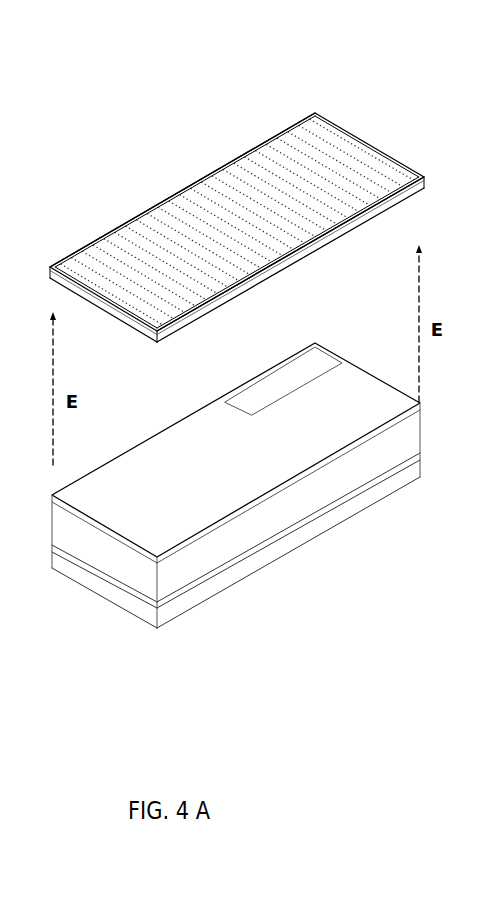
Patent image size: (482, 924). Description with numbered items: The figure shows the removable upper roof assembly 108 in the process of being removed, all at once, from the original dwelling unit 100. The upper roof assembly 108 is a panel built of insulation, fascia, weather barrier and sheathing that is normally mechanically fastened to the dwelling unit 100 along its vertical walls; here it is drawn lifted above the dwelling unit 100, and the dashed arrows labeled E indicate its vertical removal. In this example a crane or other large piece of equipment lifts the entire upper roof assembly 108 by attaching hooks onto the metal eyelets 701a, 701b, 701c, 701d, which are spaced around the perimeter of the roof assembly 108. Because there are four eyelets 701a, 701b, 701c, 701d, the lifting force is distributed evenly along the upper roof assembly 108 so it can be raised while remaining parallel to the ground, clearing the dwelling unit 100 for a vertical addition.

The removable upper roof assembly 108 is at (315, 112).
The metal eyelet 701a is at (226, 159).
The metal eyelet 701b is at (147, 206).
The metal eyelet 701c is at (262, 286).
The metal eyelet 701d is at (342, 232).
The original dwelling unit 100 is at (95, 607).